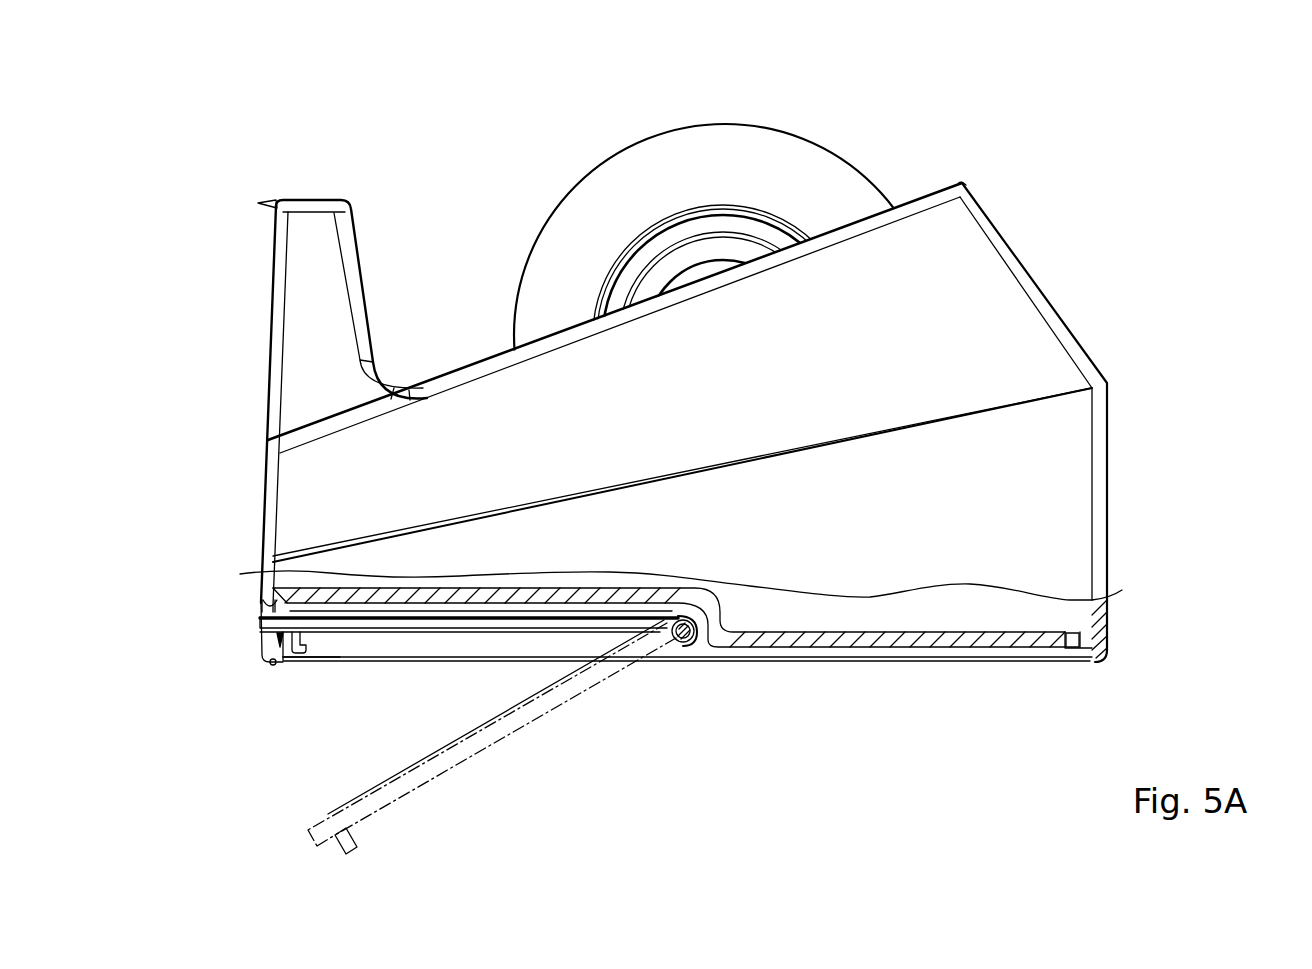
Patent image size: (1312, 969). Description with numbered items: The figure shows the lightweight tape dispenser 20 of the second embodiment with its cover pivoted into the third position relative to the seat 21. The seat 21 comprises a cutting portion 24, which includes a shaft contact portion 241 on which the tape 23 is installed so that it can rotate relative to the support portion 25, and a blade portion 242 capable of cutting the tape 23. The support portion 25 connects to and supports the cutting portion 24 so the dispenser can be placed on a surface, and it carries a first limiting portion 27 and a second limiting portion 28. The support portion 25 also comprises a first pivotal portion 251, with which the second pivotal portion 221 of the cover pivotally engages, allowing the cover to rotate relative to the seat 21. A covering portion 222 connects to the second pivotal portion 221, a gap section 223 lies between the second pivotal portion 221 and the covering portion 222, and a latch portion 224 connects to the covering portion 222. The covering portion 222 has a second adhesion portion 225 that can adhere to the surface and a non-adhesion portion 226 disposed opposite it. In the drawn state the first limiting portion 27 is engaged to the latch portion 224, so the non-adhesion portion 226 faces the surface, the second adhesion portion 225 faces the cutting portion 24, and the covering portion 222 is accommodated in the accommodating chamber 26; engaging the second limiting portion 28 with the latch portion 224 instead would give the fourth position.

The lightweight tape dispenser 20 is at (1285, 168).
The seat 21 is at (1043, 282).
The tape 23 is at (792, 160).
The cutting portion 24 is at (563, 127).
The shaft contact portion 241 is at (640, 263).
The blade portion 242 is at (272, 207).
The support portion 25 is at (1045, 568).
The second adhesion portion 225 is at (317, 615).
The first limiting portion 27 is at (275, 598).
The latch portion 224 is at (297, 652).
The accommodating chamber 26 is at (330, 645).
The non-adhesion portion 226 is at (385, 632).
The covering portion 222 is at (428, 623).
The gap section 223 is at (667, 643).
The first pivotal portion 251 is at (693, 637).
The second pivotal portion 221 is at (492, 737).
The second limiting portion 28 is at (1072, 640).